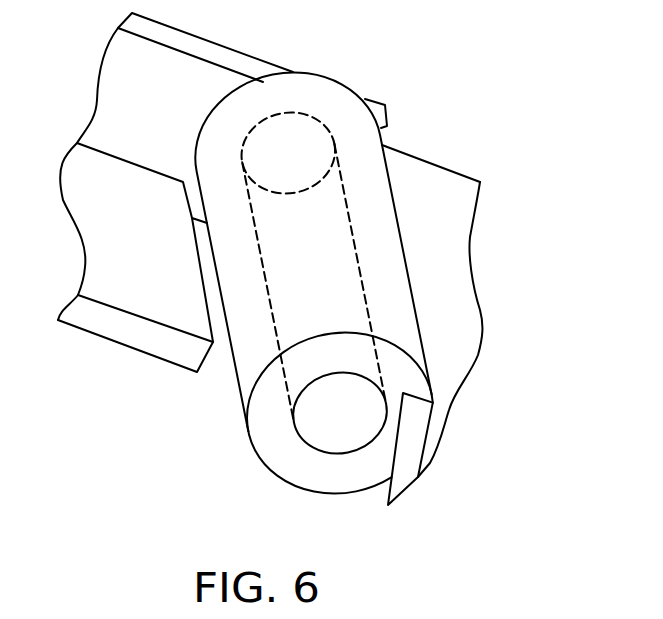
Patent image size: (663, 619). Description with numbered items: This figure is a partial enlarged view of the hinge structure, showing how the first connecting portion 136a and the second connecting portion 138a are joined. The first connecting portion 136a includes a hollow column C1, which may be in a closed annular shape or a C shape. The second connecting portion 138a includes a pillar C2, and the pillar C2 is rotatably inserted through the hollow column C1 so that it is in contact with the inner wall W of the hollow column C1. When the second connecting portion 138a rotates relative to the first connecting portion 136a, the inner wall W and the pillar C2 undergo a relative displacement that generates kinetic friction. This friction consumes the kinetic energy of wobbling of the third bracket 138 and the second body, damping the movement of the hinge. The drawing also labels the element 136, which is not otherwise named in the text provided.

The third bracket 138 is at (143, 293).
The second connecting portion 138a is at (296, 472).
The second bracket plate 136 is at (428, 428).
The first connecting portion 136a is at (432, 262).
The hollow column C1 is at (377, 225).
The pillar C2 is at (272, 320).
The inner wall W is at (333, 376).